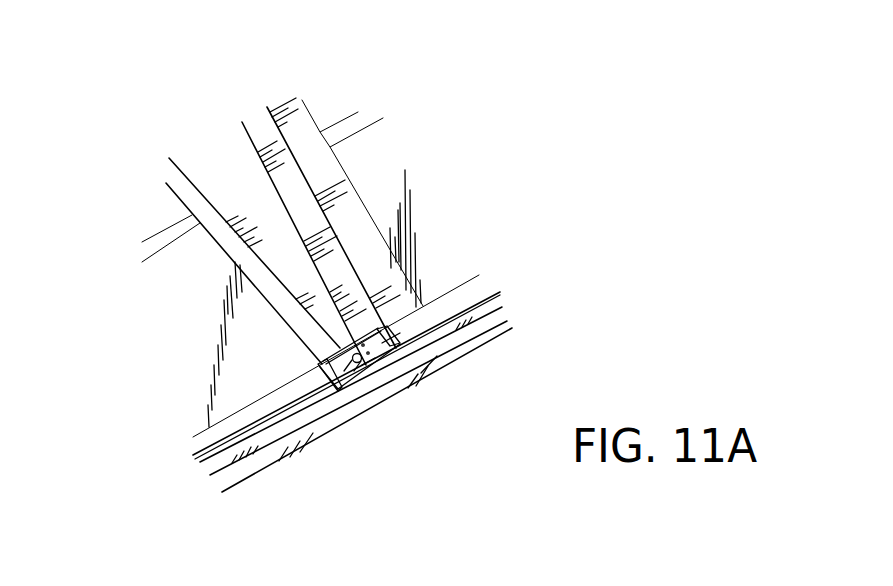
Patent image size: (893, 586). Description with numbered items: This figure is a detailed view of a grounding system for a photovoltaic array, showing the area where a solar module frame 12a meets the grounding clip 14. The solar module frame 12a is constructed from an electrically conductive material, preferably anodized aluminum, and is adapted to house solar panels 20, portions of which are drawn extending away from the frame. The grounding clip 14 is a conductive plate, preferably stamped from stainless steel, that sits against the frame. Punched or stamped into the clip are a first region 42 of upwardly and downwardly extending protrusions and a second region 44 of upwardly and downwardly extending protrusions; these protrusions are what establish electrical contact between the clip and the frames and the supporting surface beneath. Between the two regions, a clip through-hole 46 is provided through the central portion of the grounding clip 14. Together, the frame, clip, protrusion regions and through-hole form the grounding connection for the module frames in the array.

The solar module frame 12a is at (192, 195).
The solar panel 20 is at (378, 147).
The grounding clip 14 is at (360, 373).
The first region 42 is at (325, 373).
The second region 44 is at (397, 335).
The clip through-hole 46 is at (372, 345).